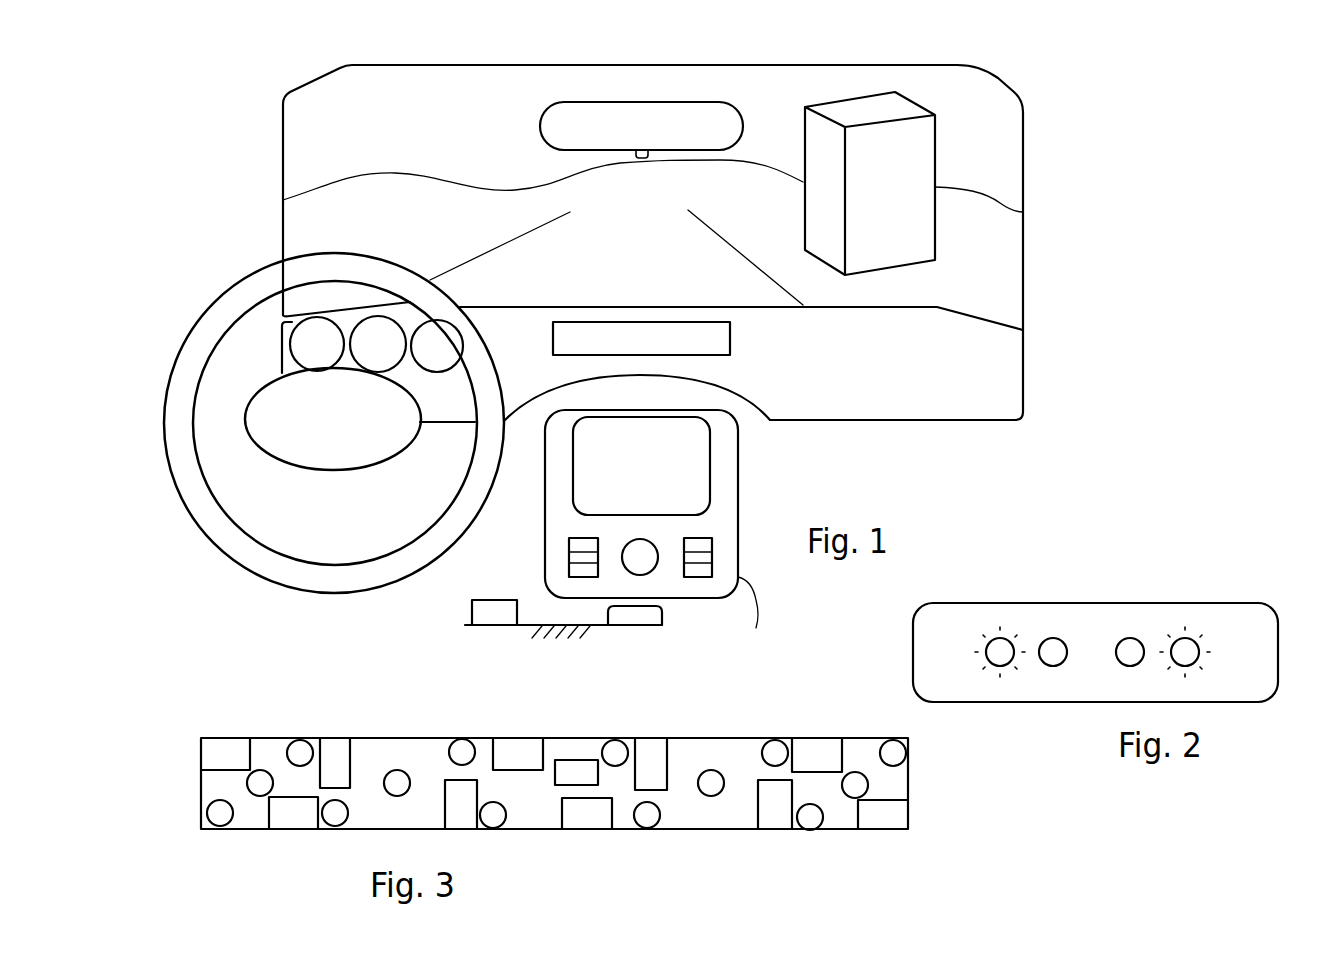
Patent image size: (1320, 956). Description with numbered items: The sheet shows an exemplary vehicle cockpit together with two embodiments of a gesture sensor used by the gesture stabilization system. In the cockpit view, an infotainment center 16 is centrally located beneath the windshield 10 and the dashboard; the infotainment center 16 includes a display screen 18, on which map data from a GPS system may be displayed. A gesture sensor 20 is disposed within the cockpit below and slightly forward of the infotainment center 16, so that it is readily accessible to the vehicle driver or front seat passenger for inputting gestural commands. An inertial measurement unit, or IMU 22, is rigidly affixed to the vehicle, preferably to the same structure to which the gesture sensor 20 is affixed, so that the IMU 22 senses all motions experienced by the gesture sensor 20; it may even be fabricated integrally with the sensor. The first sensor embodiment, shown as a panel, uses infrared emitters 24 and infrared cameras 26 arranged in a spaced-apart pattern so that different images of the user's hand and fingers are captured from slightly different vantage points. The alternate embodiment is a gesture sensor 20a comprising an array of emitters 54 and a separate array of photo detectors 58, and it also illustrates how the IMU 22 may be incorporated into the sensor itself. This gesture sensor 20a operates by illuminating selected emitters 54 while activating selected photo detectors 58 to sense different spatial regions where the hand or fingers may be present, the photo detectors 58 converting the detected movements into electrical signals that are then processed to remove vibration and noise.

In FIG. 1, the windshield 10 is at (372, 72).
In FIG. 1, the infotainment center 16 is at (736, 461).
In FIG. 1, the display screen 18 is at (756, 628).
In FIG. 1, the gesture sensor 20 is at (650, 614).
In FIG. 2, the gesture sensor 20 is at (1025, 702).
In FIG. 3, the gesture sensor 20a is at (673, 829).
In FIG. 1, the inertial measurement unit 22 is at (472, 614).
In FIG. 3, the inertial measurement unit 22 is at (555, 785).
In FIG. 2, the infrared emitters 24 is at (996, 638).
In FIG. 2, the infrared cameras 26 is at (1064, 645).
In FIG. 3, the emitters 54 is at (260, 772).
In FIG. 3, the photo detectors 58 is at (228, 746).